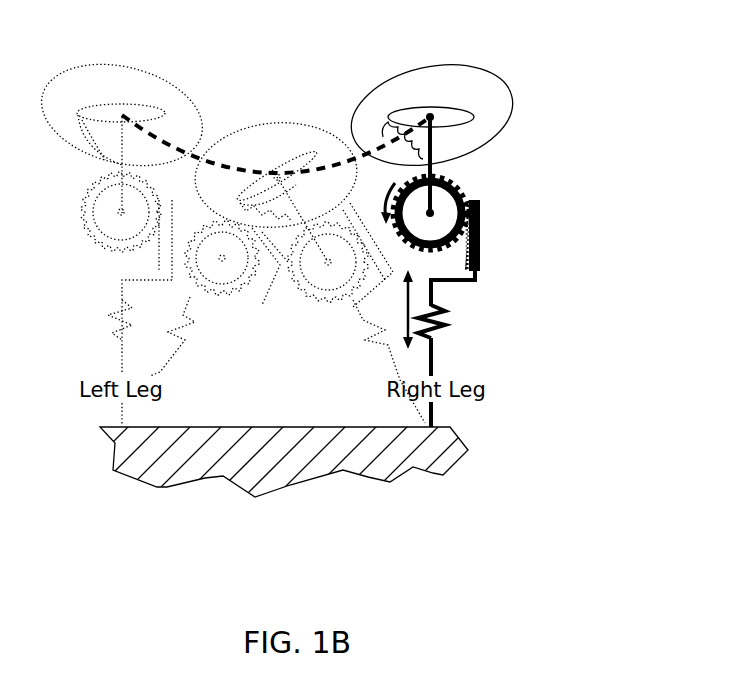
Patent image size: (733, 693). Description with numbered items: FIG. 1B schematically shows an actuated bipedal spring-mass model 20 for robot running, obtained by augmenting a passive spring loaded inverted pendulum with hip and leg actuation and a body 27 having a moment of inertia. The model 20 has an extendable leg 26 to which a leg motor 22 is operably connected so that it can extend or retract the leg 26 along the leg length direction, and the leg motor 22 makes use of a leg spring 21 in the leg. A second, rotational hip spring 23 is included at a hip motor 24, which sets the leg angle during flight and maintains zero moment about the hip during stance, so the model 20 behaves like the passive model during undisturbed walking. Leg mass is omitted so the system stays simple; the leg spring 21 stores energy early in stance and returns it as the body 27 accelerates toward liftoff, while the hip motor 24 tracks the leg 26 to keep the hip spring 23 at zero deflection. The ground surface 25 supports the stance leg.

The model 20 is at (384, 65).
The leg spring 21 is at (450, 317).
The leg motor 22 is at (462, 183).
The rotational spring 23 is at (383, 137).
The hip motor 24 is at (447, 108).
The ground 25 is at (123, 425).
The extendable leg 26 is at (482, 276).
The body 27 is at (512, 112).